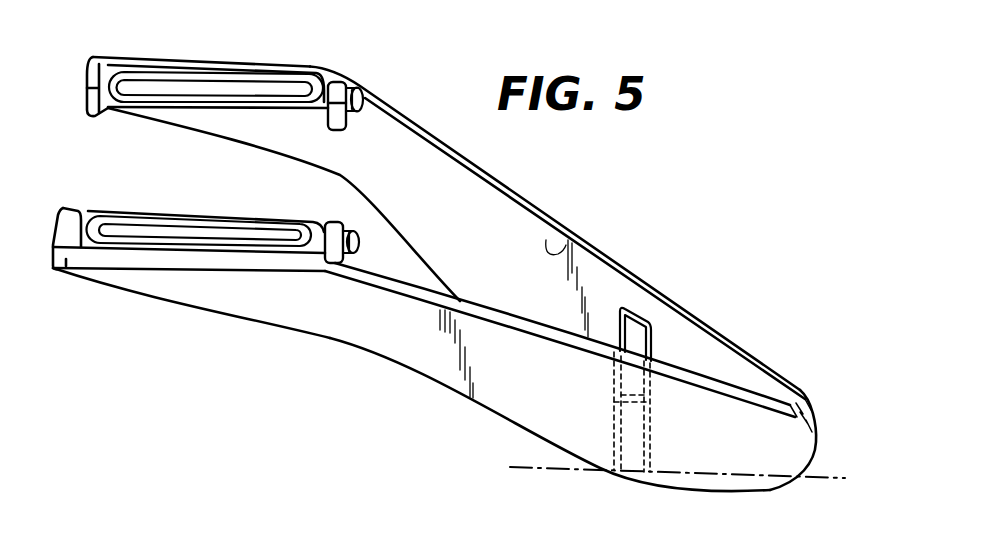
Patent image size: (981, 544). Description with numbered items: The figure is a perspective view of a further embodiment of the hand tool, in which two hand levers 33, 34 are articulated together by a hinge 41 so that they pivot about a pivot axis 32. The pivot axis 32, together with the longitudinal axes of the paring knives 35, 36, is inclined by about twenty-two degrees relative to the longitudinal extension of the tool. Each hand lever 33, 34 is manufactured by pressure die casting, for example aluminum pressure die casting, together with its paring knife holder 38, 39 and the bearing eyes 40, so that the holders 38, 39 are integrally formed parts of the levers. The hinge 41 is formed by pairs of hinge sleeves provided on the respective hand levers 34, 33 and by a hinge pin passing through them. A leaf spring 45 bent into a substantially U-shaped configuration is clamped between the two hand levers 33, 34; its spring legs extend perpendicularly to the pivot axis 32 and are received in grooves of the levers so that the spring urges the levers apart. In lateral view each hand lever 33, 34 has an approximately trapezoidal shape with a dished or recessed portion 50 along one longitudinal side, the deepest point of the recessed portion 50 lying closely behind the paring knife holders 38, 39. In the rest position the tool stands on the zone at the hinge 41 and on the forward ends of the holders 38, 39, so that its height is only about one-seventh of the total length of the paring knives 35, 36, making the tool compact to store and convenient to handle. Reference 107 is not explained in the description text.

The pivot axis 32 is at (512, 466).
The hand lever 33 is at (422, 363).
The hand lever 34 is at (571, 246).
The paring knife 35 is at (238, 110).
The paring knife 36 is at (155, 211).
The paring knife holder 38 is at (183, 128).
The paring knife holder 39 is at (163, 284).
The bearing eyes 40 is at (85, 117).
The hinge 41 is at (795, 486).
The leaf spring 45 is at (631, 334).
The dished or recessed portion 50 is at (326, 333).
The screws 107 is at (353, 95).